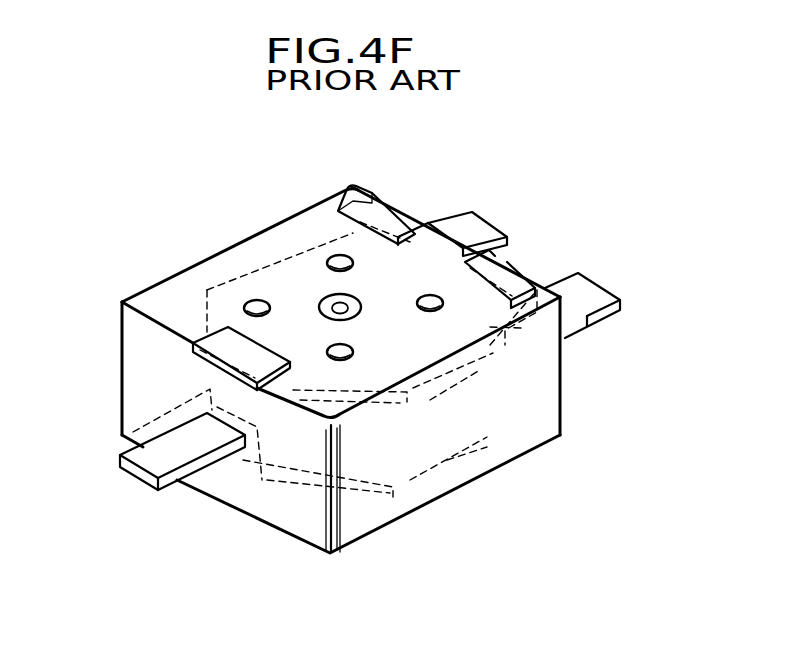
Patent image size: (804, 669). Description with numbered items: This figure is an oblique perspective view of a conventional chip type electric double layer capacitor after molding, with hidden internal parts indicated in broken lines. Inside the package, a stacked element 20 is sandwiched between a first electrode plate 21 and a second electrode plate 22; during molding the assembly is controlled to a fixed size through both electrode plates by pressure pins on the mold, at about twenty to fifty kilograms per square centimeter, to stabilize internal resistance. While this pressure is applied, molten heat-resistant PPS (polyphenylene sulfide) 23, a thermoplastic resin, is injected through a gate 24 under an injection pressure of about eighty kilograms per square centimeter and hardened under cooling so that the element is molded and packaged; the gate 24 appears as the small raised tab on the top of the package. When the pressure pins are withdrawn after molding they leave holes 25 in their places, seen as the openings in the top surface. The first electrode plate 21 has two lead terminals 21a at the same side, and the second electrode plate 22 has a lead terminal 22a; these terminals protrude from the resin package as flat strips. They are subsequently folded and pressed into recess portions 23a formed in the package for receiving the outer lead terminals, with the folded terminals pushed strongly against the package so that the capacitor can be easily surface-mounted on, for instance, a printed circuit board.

The stacked element 20 is at (390, 447).
The first electrode plate 21 is at (443, 383).
The lead terminal 21a is at (487, 262).
The second electrode plate 22 is at (455, 455).
The lead terminal 22a is at (147, 463).
The heat-resistant PPS (polyphenylene sulfide) 23 is at (325, 213).
The recess portions 23a is at (193, 355).
The gate 24 is at (487, 233).
The holes 25 is at (250, 302).